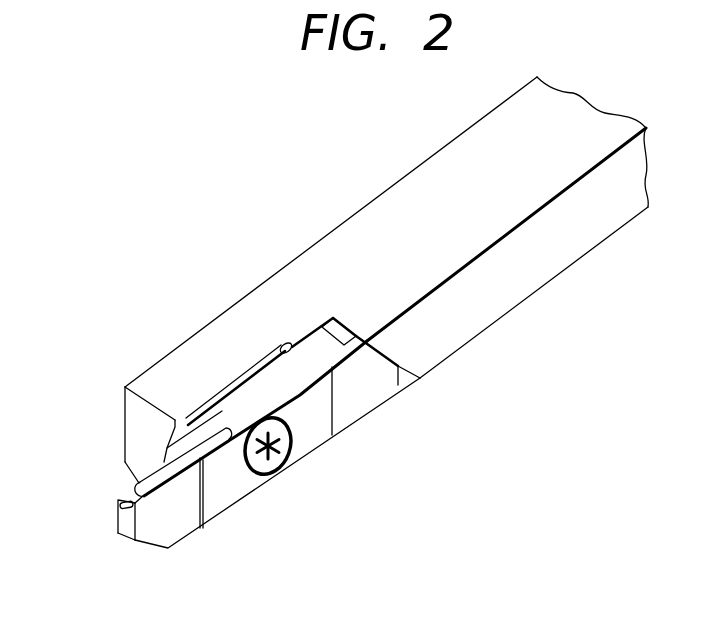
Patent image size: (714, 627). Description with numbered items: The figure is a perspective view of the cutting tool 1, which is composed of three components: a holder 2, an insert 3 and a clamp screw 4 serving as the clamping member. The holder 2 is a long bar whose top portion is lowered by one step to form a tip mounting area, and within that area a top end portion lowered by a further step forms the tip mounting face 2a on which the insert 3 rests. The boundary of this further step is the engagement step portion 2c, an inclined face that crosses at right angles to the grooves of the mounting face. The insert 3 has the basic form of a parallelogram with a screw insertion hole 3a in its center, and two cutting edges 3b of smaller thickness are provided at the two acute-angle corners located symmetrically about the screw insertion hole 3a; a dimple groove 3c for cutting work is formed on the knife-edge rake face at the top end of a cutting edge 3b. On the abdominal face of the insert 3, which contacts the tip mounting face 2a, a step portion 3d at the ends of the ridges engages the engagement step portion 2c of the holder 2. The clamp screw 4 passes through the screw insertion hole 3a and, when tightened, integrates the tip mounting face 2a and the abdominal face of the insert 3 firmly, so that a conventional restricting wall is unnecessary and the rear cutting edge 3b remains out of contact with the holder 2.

The cutting tool 1 is at (298, 170).
The holder 2 is at (386, 280).
The tip mounting face 2a is at (234, 379).
The engagement step portion 2c is at (287, 343).
The insert 3 is at (257, 470).
The screw insertion hole 3a is at (264, 478).
The cutting edge 3b is at (146, 522).
The dimple groove 3c is at (120, 500).
The step portion 3d is at (284, 356).
The clamp screw 4 is at (283, 458).